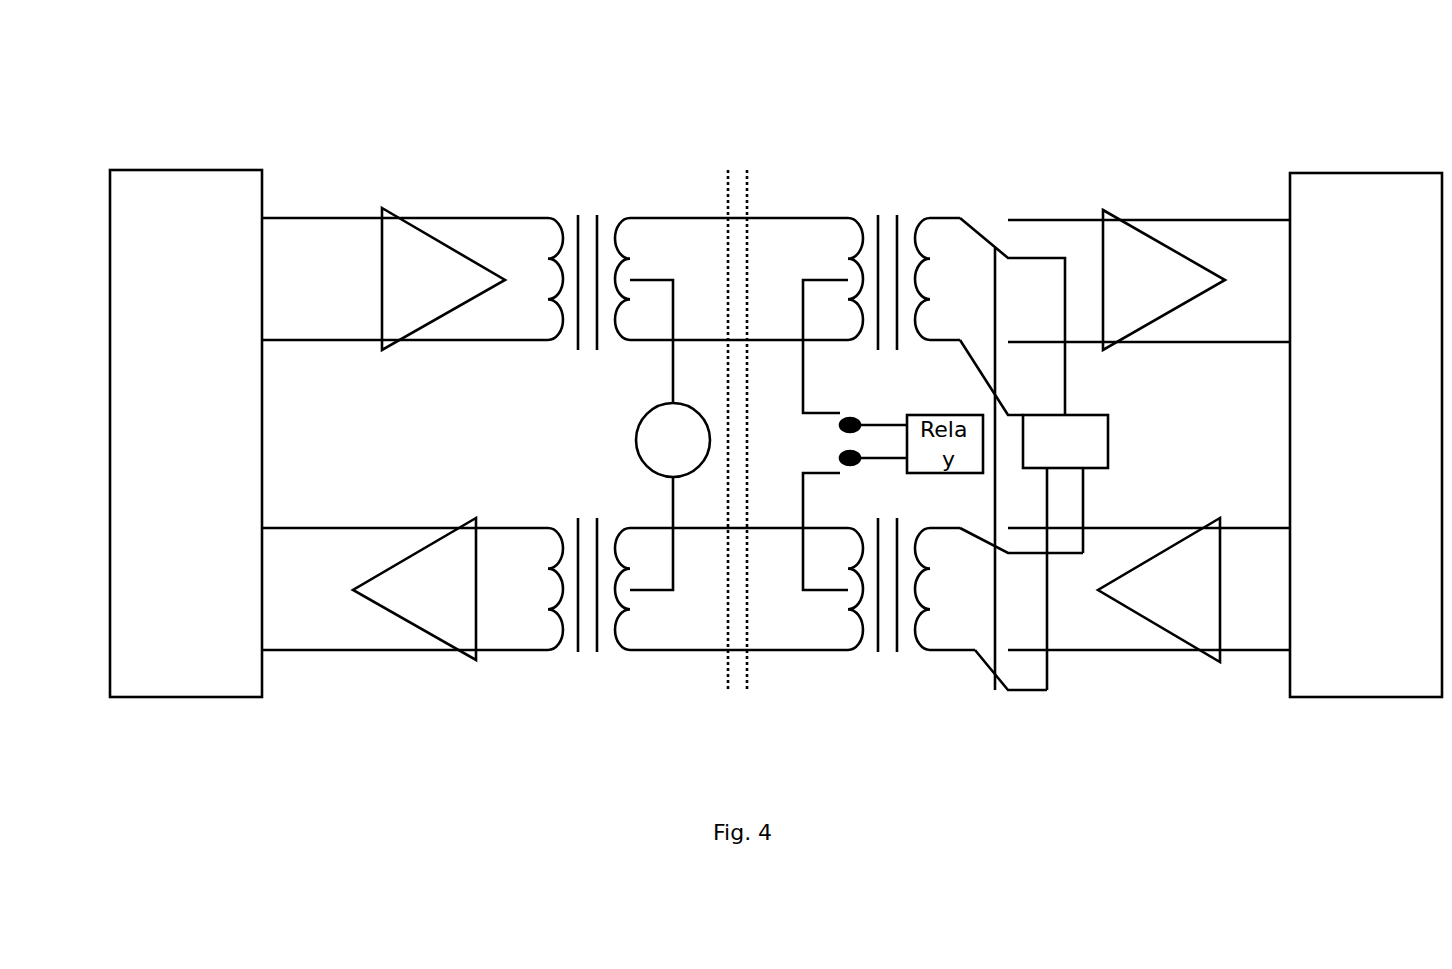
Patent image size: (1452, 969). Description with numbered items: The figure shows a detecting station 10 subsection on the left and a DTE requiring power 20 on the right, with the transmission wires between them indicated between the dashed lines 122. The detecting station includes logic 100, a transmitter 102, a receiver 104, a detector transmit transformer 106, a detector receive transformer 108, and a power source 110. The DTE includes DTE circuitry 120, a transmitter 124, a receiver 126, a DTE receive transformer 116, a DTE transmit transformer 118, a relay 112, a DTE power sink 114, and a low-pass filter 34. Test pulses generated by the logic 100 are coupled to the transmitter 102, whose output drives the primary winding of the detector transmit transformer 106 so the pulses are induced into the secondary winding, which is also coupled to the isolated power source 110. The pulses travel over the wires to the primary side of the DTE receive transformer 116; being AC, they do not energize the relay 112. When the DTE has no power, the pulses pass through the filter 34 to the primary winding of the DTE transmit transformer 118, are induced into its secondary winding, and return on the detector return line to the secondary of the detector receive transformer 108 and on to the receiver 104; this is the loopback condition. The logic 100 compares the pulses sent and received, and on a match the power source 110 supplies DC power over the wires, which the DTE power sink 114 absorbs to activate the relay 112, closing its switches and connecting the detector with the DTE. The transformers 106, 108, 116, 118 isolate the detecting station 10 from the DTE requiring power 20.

The detecting station 10 is at (482, 100).
The DTE requiring power 20 is at (1108, 100).
The low-pass filter 34 is at (1083, 415).
The logic 100 is at (186, 433).
The transmitter 102 is at (443, 279).
The receiver 104 is at (414, 589).
The detector transmit transformer 106 is at (588, 208).
The detector receive transformer 108 is at (588, 663).
The power source 110 is at (648, 410).
The relay 112 is at (975, 405).
The DTE power sink 114 is at (823, 395).
The DTE receive transformer 116 is at (890, 208).
The DTE transmit transformer 118 is at (890, 663).
The DTE circuitry 120 is at (1366, 435).
The dashed lines 122 is at (737, 153).
The transmitter 124 is at (1164, 280).
The receiver 126 is at (1159, 590).